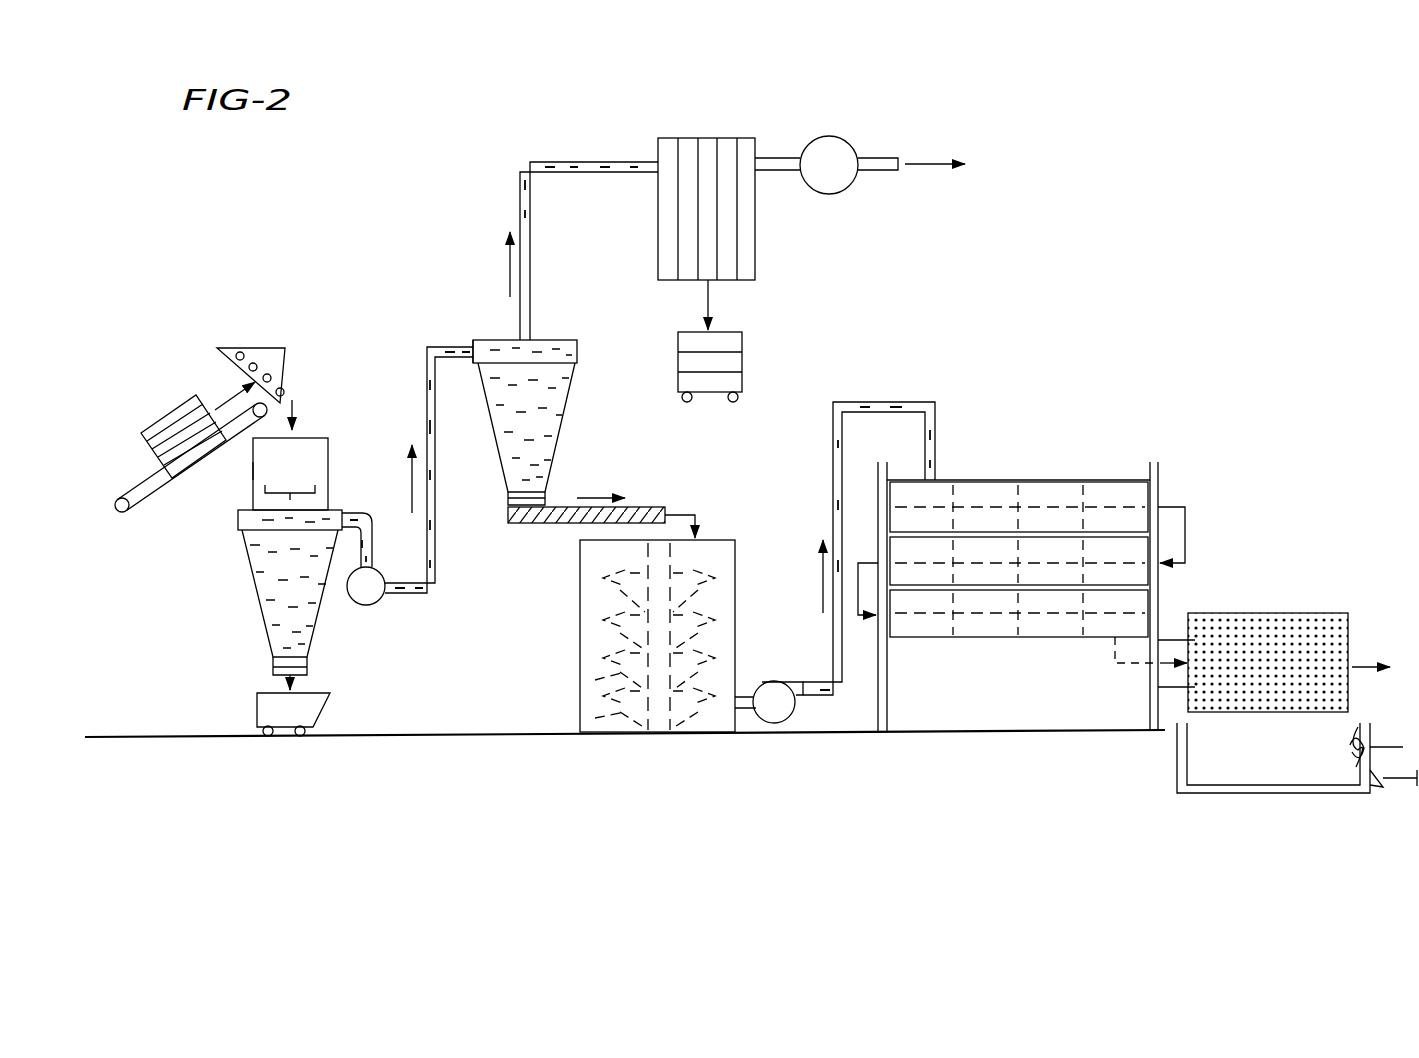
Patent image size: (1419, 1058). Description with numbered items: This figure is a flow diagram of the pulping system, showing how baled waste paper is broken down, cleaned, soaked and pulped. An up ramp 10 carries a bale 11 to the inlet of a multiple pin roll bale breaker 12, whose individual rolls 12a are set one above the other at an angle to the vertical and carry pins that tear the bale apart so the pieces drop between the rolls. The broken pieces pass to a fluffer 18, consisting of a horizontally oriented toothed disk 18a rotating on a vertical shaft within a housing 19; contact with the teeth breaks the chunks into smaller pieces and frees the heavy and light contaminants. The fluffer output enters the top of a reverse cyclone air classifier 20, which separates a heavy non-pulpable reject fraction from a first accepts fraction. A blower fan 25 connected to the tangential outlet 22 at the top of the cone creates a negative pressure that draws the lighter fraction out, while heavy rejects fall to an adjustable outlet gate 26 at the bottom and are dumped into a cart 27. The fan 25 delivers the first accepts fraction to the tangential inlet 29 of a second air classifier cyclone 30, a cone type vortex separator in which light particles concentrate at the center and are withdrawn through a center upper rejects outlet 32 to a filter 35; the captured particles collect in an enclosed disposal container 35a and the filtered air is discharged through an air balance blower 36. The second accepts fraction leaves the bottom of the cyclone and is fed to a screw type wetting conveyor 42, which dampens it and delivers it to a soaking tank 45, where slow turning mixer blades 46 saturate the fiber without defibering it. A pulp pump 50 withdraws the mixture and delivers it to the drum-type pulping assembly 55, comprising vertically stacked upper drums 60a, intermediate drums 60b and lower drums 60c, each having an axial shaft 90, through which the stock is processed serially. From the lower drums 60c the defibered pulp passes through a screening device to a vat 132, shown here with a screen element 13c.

The up ramp 10 is at (143, 493).
The bale 11 is at (141, 434).
The bale breaker 12 is at (280, 342).
The rolls 12a is at (242, 352).
The fluffer 18 is at (330, 460).
The disk 18a is at (290, 472).
The housing 19 is at (253, 470).
The air classifier 20 is at (252, 590).
The tangential outlet 22 is at (352, 515).
The blower fan 25 is at (375, 597).
The outlet gate 26 is at (274, 655).
The cart 27 is at (307, 713).
The tangential inlet 29 is at (473, 348).
The second air classifier cyclone 30 is at (575, 427).
The center upper rejects outlet 32 is at (530, 340).
The filter 35 is at (750, 256).
The disposal container 35a is at (742, 362).
The air balance blower 36 is at (840, 145).
The wetting conveyor 42 is at (560, 517).
The soaking tank 45 is at (578, 652).
The mixer blades 46 is at (578, 688).
The pulp pump 50 is at (772, 722).
The pulping assembly 55 is at (988, 475).
The upper drums 60a is at (1057, 477).
The intermediate drums 60b is at (1125, 577).
The lower drums 60c is at (907, 627).
The shaft 90 is at (546, 495).
The filter 13c is at (1293, 618).
The vat 132 is at (1230, 757).